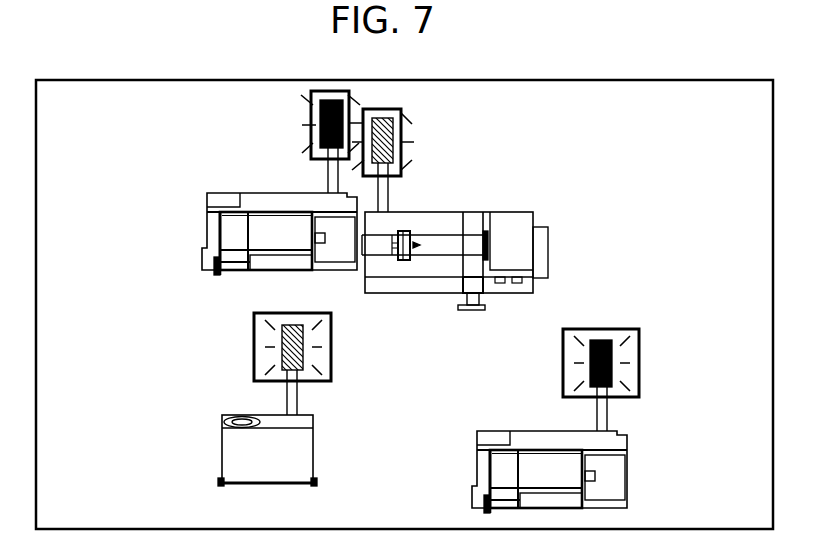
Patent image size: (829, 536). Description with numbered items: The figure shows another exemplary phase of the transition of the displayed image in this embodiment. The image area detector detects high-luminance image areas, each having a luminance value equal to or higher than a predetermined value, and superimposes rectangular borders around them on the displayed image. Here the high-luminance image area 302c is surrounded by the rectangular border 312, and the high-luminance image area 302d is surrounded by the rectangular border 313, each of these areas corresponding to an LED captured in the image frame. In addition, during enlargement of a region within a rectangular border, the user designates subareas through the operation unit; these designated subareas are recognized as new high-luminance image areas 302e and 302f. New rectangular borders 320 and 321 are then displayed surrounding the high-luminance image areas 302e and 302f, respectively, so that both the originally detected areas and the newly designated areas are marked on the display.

The rectangular border 320 is at (296, 140).
The high-luminance image area 302e is at (311, 134).
The rectangular border 321 is at (432, 160).
The high-luminance image area 302f is at (404, 151).
The rectangular border 312 is at (233, 364).
The high-luminance image area 302c is at (282, 350).
The rectangular border 313 is at (543, 380).
The high-luminance image area 302d is at (590, 368).